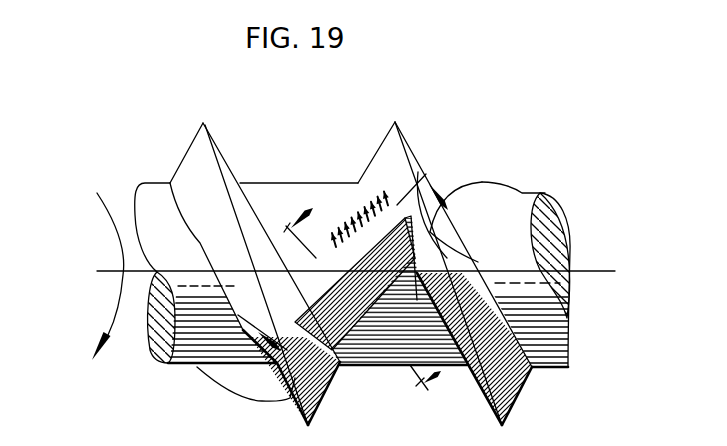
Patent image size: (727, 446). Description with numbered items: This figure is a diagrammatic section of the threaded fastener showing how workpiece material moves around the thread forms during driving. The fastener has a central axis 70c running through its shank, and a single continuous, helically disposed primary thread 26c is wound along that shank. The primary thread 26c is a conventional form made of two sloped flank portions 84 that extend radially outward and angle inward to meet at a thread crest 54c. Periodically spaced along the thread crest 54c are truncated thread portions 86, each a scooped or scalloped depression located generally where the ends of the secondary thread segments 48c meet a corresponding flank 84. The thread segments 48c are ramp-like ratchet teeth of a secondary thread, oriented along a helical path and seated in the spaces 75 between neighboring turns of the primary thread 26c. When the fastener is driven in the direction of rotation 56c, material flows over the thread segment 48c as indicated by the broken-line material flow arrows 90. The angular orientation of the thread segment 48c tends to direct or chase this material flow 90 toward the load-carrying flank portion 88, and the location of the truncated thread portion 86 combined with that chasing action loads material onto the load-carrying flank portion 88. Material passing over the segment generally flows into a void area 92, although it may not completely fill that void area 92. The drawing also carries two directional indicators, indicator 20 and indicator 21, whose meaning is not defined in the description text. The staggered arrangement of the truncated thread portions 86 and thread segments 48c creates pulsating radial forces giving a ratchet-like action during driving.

The thread crest 54c is at (191, 144).
The sloped flank portions 84 is at (233, 181).
The spaces 75 is at (297, 194).
The void area 92 is at (333, 226).
The load-carrying flank portion 88 is at (383, 183).
The feed direction arrow 20 is at (349, 248).
The truncated thread portions 86 is at (473, 257).
The cutting direction arrow 21 is at (365, 305).
The direction of rotation 56c is at (118, 297).
The central axis 70c is at (612, 274).
The material flow arrows 90 is at (365, 365).
The thread segments 48c is at (328, 386).
The primary thread 26c is at (547, 379).